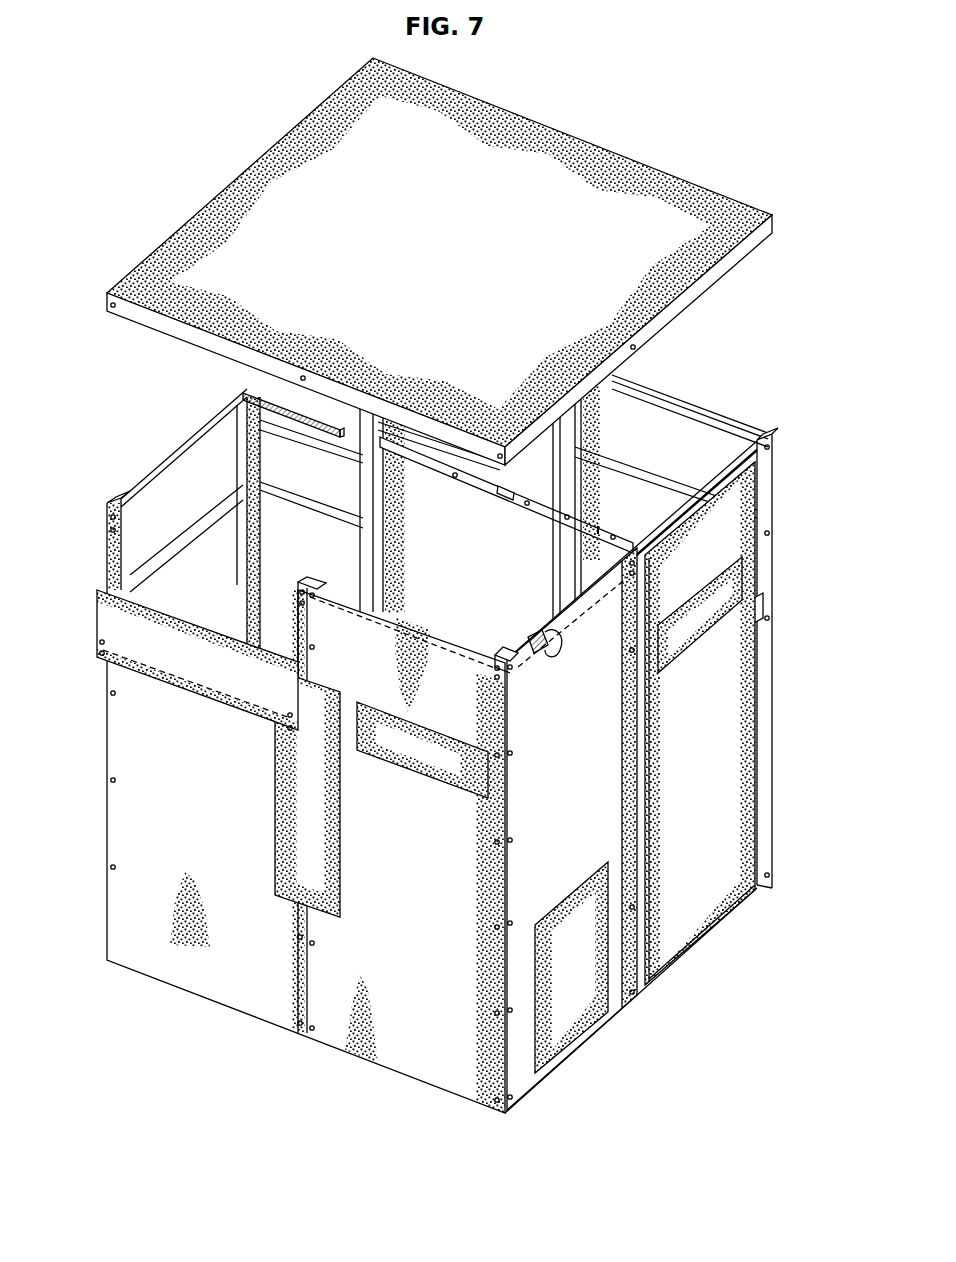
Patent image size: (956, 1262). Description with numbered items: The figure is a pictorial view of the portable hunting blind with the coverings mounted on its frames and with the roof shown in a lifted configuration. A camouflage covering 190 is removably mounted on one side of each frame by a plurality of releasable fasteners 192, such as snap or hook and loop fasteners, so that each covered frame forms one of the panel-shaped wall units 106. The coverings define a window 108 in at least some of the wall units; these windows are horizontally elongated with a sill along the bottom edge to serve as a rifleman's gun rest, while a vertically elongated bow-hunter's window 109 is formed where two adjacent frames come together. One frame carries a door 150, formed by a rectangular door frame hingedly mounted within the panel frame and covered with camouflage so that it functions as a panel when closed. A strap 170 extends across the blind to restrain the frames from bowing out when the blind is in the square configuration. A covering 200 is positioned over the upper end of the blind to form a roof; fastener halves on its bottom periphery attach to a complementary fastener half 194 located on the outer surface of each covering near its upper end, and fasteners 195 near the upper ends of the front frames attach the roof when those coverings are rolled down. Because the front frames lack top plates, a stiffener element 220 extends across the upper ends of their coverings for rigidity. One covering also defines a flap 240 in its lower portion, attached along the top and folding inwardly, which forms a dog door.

The covering forming a roof 200 is at (456, 259).
The camouflage covering 190 is at (126, 817).
The strap 170 is at (278, 418).
The releasable fasteners 192 is at (110, 518).
The fasteners 195 is at (110, 530).
The fastener half 194 is at (497, 676).
The stiffener element 220 is at (548, 640).
The wall units 106 is at (214, 788).
The bow-hunter's window 109 is at (327, 813).
The window 108 is at (418, 753).
The door 150 is at (719, 846).
The flap 240 is at (589, 980).